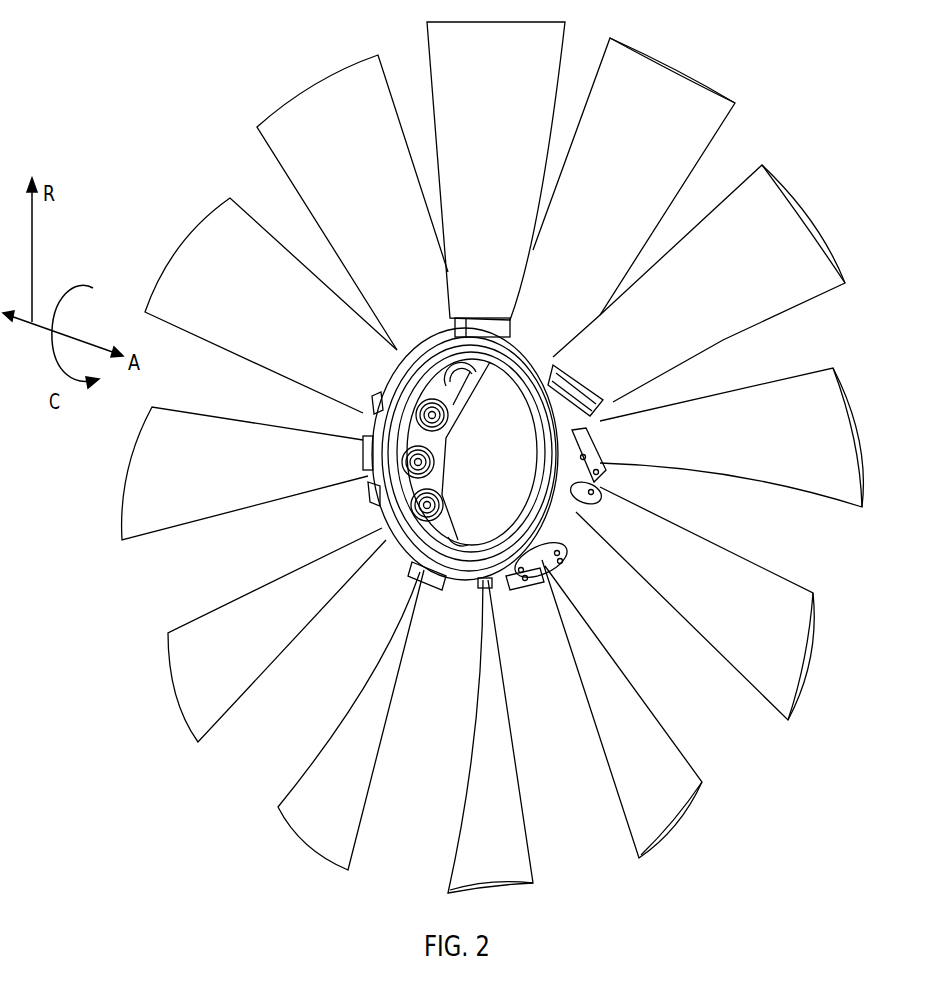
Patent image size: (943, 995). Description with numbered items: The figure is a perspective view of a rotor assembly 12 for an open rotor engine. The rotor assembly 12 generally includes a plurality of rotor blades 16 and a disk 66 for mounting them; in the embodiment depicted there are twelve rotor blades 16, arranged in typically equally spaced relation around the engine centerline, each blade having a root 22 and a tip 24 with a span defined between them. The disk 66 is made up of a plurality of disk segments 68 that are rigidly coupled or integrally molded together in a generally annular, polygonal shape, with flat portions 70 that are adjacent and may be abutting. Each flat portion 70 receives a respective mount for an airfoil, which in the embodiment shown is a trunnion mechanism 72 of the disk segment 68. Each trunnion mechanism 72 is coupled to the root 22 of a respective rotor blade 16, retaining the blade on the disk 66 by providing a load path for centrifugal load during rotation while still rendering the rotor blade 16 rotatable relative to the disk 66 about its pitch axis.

The rotor assembly 12 is at (300, 46).
The rotor blade 16 is at (778, 205).
The root 22 is at (606, 438).
The tip 24 is at (858, 440).
The disk 66 is at (355, 518).
The disk segment 68 is at (528, 472).
The flat portion 70 is at (540, 440).
The trunnion mechanism 72 is at (610, 487).